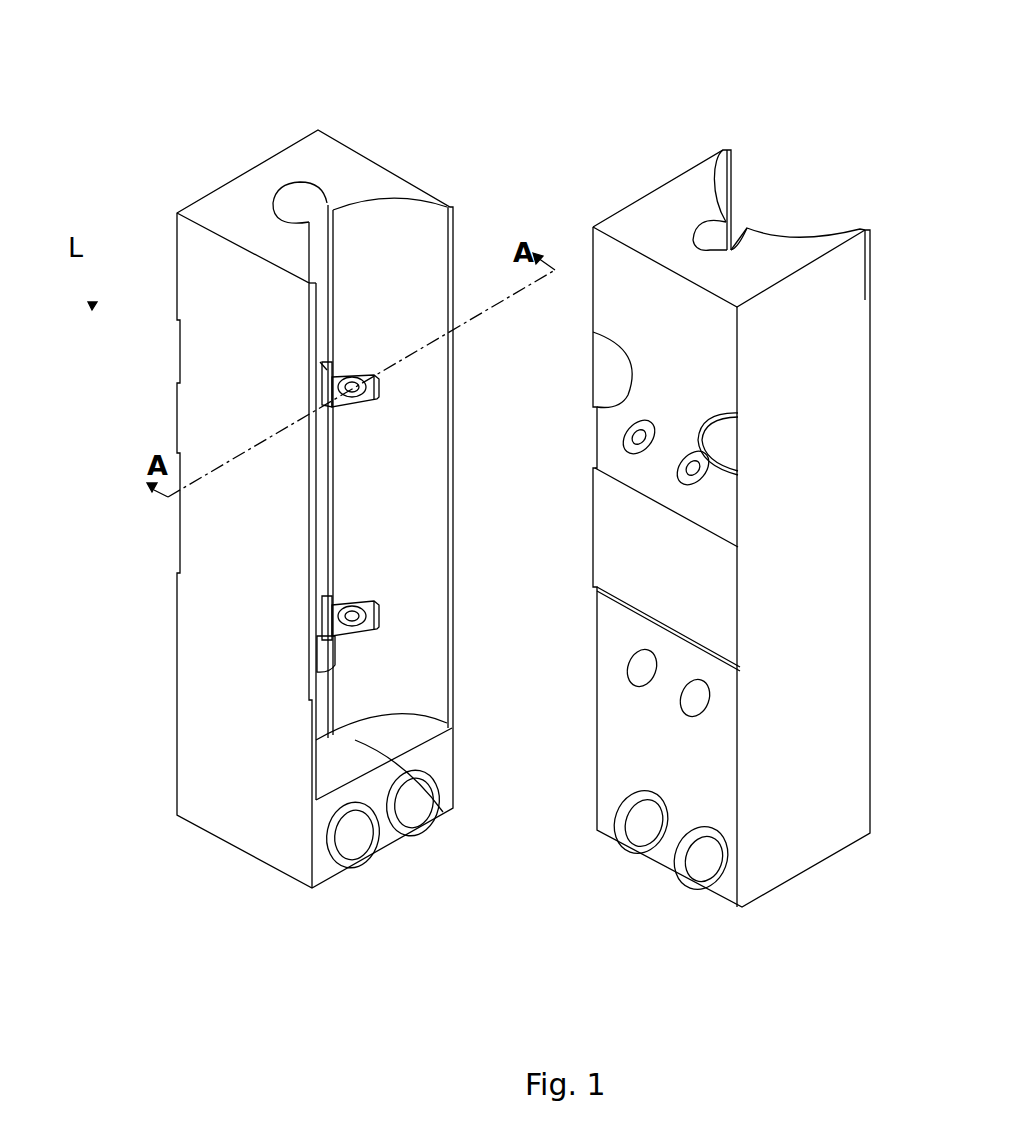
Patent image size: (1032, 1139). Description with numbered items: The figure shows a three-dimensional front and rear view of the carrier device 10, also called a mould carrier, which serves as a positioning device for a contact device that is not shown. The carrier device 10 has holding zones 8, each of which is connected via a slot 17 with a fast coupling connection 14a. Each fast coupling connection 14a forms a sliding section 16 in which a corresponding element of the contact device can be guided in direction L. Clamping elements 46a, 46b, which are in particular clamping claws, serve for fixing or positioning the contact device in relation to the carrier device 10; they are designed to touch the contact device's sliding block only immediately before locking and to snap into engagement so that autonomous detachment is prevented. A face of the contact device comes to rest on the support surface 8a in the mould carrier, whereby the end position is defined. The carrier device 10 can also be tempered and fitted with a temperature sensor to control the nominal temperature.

The carrier device 10 is at (283, 113).
The holding zone 8 is at (430, 545).
The support surface 8a is at (443, 812).
The fast coupling connection 14a is at (317, 200).
The sliding section 16 is at (287, 200).
The slot 17 is at (315, 205).
The clamping element 46a is at (362, 400).
The clamping element 46b is at (363, 633).